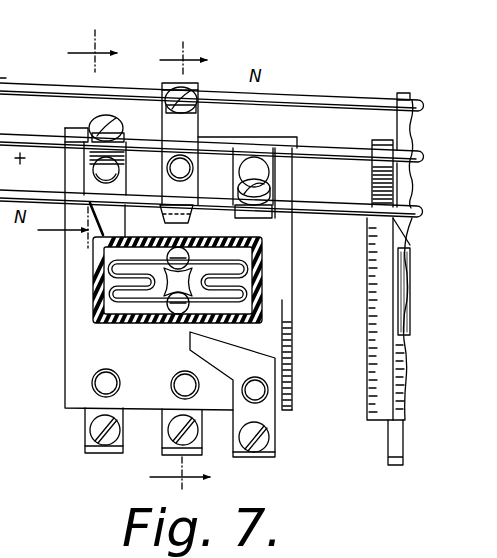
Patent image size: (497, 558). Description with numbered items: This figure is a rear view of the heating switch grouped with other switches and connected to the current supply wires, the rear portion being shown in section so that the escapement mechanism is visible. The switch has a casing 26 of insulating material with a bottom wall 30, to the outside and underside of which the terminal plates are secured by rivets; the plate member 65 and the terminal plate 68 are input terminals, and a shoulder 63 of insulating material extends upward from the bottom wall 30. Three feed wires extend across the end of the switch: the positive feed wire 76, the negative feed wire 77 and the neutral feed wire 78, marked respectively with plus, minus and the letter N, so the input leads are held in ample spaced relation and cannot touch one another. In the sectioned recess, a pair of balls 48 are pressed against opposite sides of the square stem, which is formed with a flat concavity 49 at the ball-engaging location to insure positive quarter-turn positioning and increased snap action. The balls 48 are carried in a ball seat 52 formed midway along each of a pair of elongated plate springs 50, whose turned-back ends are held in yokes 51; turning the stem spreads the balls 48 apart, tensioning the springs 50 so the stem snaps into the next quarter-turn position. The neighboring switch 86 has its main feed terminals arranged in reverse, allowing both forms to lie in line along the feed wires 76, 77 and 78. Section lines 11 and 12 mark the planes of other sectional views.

The section line 11- 11 is at (61, 142).
The section line 12- 12 is at (173, 262).
The casing 26 is at (290, 403).
The bottom wall 30 is at (57, 356).
The balls 48 is at (160, 258).
The flat concavity 49 is at (187, 281).
The plate springs 50 is at (193, 270).
The yokes 51 is at (95, 298).
The ball seat 52 is at (174, 298).
The shoulder 63 is at (85, 437).
The plate member 65 is at (196, 128).
The terminal plate 68 is at (179, 72).
The positive feed wire 76 is at (353, 163).
The negative feed wire 77 is at (358, 110).
The neutral feed wire 78 is at (347, 215).
The switch 86 is at (362, 362).